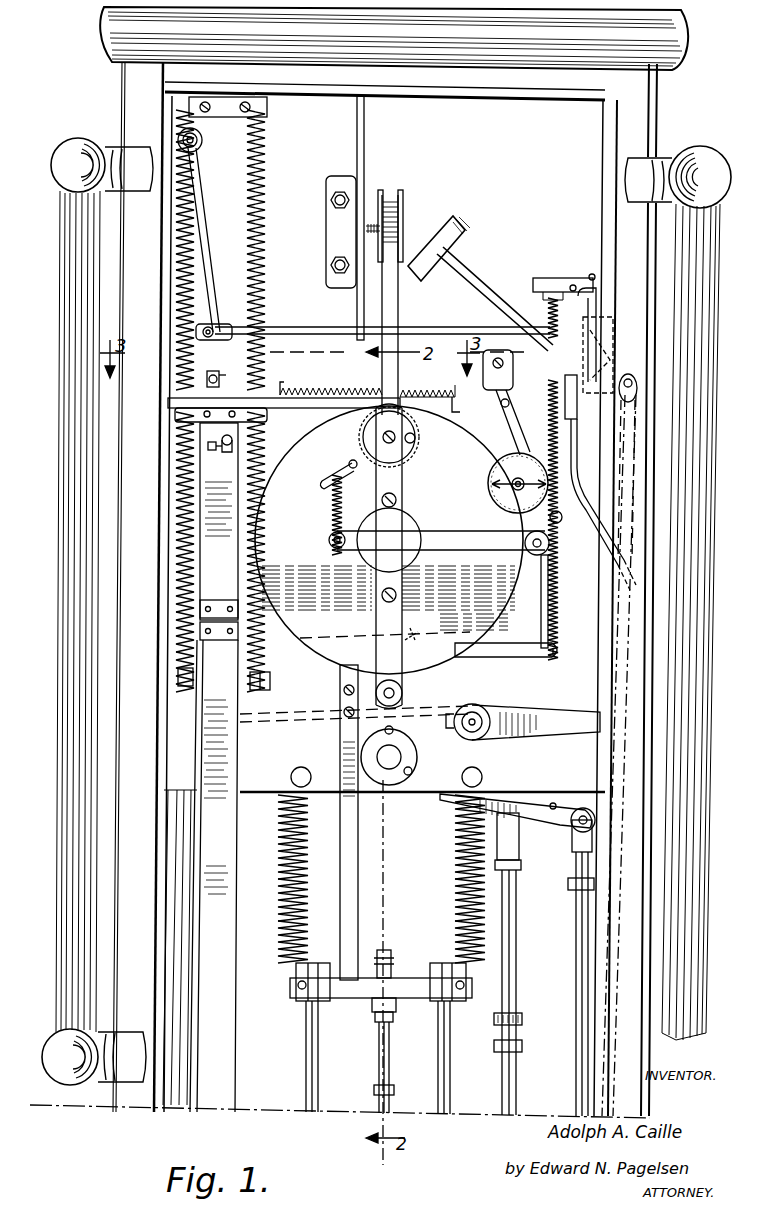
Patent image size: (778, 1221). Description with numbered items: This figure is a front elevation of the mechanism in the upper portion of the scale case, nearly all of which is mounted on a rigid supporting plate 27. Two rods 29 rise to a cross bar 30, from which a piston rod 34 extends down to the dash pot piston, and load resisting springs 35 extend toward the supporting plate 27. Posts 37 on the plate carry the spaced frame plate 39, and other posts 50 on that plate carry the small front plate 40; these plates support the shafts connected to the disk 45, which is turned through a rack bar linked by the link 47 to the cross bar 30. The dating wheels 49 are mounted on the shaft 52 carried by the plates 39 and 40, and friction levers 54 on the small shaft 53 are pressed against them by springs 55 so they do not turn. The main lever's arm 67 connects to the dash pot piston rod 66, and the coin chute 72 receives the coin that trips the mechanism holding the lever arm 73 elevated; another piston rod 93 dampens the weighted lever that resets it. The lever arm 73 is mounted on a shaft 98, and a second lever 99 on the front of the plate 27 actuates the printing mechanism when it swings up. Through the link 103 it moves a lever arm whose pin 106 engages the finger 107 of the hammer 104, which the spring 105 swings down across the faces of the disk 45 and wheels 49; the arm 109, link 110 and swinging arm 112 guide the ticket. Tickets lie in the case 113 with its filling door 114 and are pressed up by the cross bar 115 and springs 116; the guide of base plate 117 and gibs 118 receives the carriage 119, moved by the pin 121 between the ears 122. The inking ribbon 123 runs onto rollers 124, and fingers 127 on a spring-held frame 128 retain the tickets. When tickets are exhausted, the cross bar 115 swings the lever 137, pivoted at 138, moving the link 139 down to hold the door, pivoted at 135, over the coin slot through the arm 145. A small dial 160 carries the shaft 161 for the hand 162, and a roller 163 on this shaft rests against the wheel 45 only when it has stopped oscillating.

The supporting plate 27 is at (290, 736).
The rods 29 is at (306, 1047).
The cross bar 30 is at (381, 975).
The piston rod 34 is at (389, 1094).
The load resisting springs 35 is at (308, 925).
The posts 37 is at (550, 546).
The frame plate 39 is at (437, 541).
The front plate 40 is at (400, 536).
The disk 45 is at (492, 483).
The link 47 is at (358, 882).
The dating wheels 49 is at (368, 440).
The posts 50 is at (393, 498).
The shaft 52 is at (418, 440).
The small shaft 53 is at (350, 463).
The friction levers 54 is at (319, 487).
The springs 55 is at (332, 508).
The piston rod 66 is at (575, 984).
The arm 67 is at (562, 822).
The coin chute 72 is at (578, 472).
The lever arm 73 is at (283, 735).
The piston rod 93 is at (516, 935).
The shaft 98 is at (475, 710).
The lever 99 is at (552, 712).
The link 103 is at (632, 492).
The hammer 104 is at (480, 284).
The spring 105 is at (550, 430).
The pin 106 is at (612, 356).
The finger 107 is at (577, 415).
The arm 109 is at (612, 334).
The link 110 is at (305, 330).
The swinging arm 112 is at (204, 250).
The case 113 is at (214, 876).
The filling door 114 is at (219, 531).
The cross bar 115 is at (267, 680).
The springs 116 is at (176, 600).
The base plate 117 is at (288, 408).
The gibs 118 is at (288, 391).
The carriage 119 is at (170, 398).
The pin 121 is at (221, 380).
The ears 122 is at (210, 372).
The inking ribbon 123 is at (393, 310).
The rollers 124 is at (402, 215).
The fingers 127 is at (456, 404).
The spring-held frame 128 is at (430, 391).
The pivot 135 is at (574, 280).
The lever 137 is at (505, 645).
The pivot 138 is at (420, 630).
The link 139 is at (549, 583).
The arm 145 is at (546, 280).
The dial 160 is at (500, 505).
The shaft 161 is at (508, 489).
The hand 162 is at (614, 376).
The roller 163 is at (557, 511).